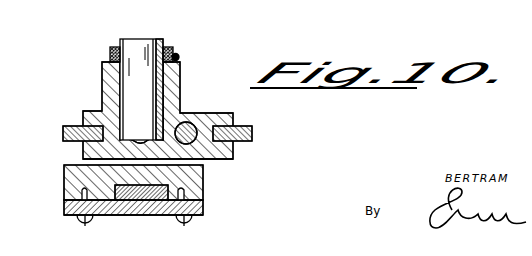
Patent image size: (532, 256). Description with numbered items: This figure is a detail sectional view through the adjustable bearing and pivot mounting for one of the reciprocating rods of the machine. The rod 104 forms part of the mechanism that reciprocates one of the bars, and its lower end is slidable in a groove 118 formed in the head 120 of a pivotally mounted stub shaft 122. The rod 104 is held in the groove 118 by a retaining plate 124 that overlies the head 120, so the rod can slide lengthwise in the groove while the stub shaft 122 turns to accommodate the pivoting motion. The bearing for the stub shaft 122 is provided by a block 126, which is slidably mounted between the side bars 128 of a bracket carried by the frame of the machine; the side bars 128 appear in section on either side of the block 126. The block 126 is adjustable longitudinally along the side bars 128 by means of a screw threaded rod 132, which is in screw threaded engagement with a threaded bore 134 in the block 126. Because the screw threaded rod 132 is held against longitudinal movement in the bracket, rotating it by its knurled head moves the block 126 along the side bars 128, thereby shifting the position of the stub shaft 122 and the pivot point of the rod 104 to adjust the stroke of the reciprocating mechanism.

The rod 104 is at (136, 215).
The groove 118 is at (162, 198).
The head 120 is at (203, 190).
The stub shaft 122 is at (156, 88).
The retaining plate 124 is at (204, 206).
The block 126 is at (181, 102).
The side bars 128 is at (63, 136).
The screw threaded rod 132 is at (213, 161).
The threaded bore 134 is at (196, 127).